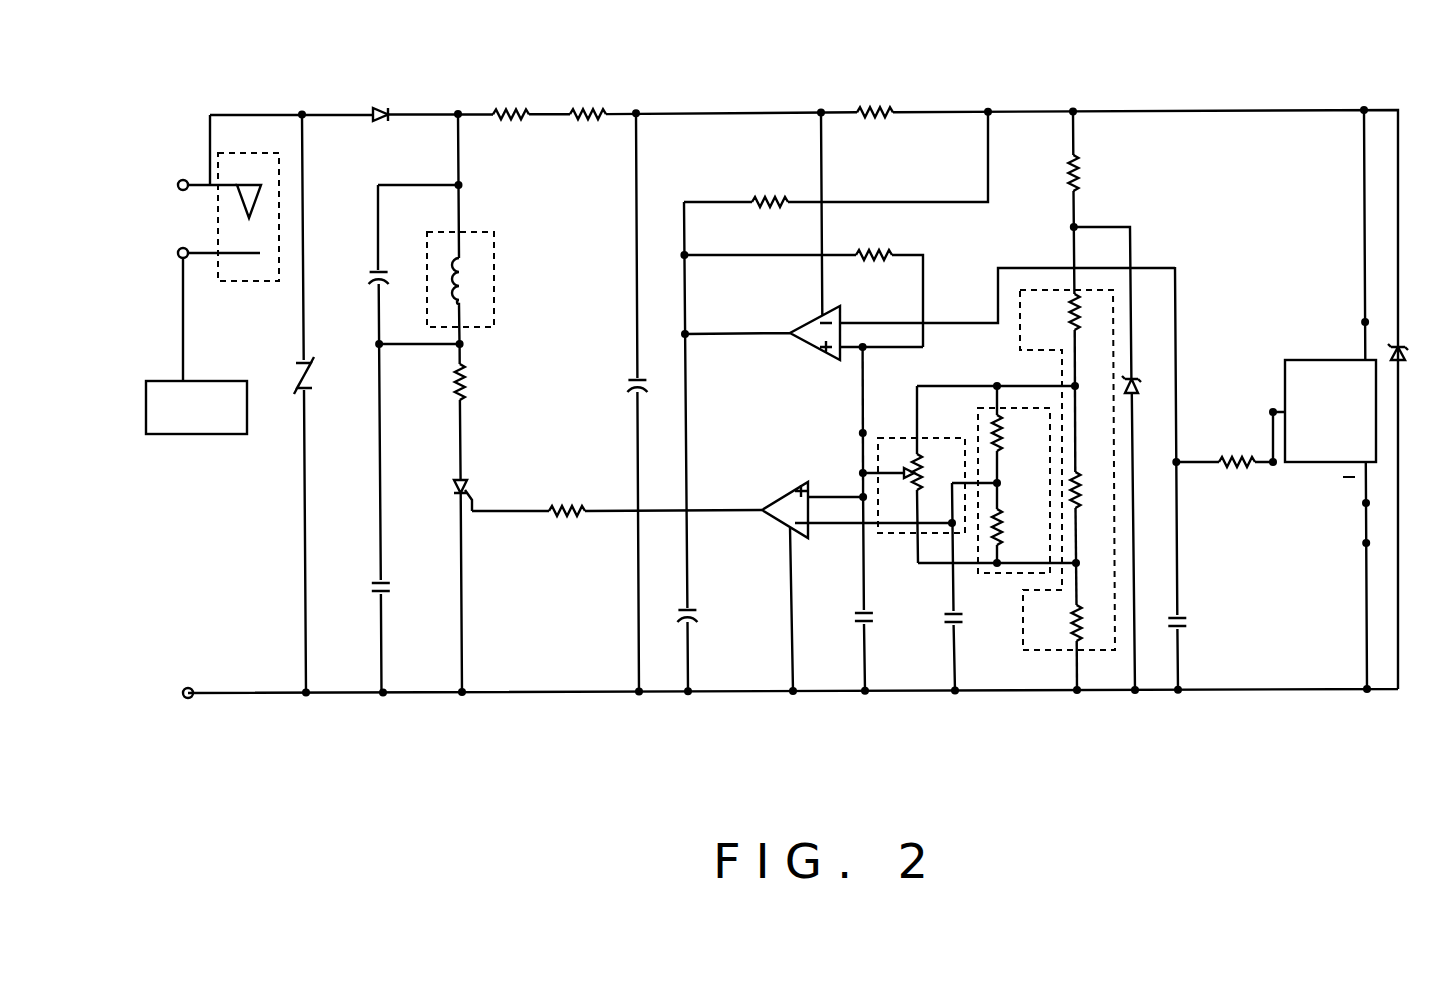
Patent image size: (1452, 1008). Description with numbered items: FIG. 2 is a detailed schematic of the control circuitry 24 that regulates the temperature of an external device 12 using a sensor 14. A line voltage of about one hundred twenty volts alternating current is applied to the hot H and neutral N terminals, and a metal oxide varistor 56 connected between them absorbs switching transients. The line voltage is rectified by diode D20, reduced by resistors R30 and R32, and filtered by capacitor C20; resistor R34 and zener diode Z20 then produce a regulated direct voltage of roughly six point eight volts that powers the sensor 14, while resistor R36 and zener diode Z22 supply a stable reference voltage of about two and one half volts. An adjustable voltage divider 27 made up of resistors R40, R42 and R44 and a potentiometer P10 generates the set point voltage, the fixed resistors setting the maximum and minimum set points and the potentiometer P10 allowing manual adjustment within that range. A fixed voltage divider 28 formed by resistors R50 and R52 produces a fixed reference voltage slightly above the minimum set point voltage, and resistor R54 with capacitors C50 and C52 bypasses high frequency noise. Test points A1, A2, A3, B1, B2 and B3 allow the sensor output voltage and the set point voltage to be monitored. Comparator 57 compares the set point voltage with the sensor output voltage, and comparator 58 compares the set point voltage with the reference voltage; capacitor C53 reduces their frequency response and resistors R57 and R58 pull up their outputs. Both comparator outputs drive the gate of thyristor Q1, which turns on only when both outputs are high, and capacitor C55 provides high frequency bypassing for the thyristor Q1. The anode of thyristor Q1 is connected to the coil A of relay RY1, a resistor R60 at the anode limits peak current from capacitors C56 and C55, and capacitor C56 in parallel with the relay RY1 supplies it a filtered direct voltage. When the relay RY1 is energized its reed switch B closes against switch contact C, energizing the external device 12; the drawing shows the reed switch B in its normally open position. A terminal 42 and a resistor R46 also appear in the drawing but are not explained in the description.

The external device 12 is at (210, 425).
The sensor assembly 14 is at (1343, 425).
The control circuitry 24 is at (1143, 715).
The adjustable voltage divider 27 is at (1020, 598).
The fixed voltage divider 28 is at (985, 410).
The terminal 42 is at (199, 311).
The metal oxide varistor 56 is at (321, 404).
The comparator 57 is at (808, 316).
The comparator 58 is at (775, 502).
The relay coil A is at (460, 229).
The magnetic reed switch B is at (233, 185).
The switch contact C is at (245, 253).
The hot terminal H is at (204, 198).
The neutral terminal N is at (186, 707).
The test point A1 is at (1364, 322).
The test point A2 is at (1273, 410).
The test point A3 is at (1366, 503).
The test point B1 is at (860, 433).
The test point B2 is at (1273, 465).
The test point B3 is at (1366, 543).
The relay RY1 is at (441, 231).
The diode D20 is at (385, 98).
The zener diode Z20 is at (1420, 338).
The zener diode Z22 is at (1137, 382).
The thyristor Q1 is at (442, 583).
The variable potentiometer resistor P10 is at (913, 474).
The resistor R30 is at (511, 98).
The resistor R32 is at (588, 98).
The resistor R34 is at (876, 97).
The resistor R36 is at (1099, 202).
The resistor R40 is at (1053, 383).
The resistor R42 is at (1100, 538).
The resistor R44 is at (1054, 647).
The resistor R46 is at (801, 285).
The resistor R50 is at (1000, 498).
The resistor R52 is at (999, 600).
The resistor R54 is at (1228, 437).
The pull up resistor R57 is at (617, 526).
The pull up resistor R58 is at (836, 159).
The resistor R60 is at (484, 412).
The capacitor C20 is at (617, 402).
The capacitor C50 is at (887, 594).
The capacitor C52 is at (1205, 478).
The capacitor C53 is at (710, 446).
The capacitor C55 is at (404, 518).
The capacitor C56 is at (393, 264).